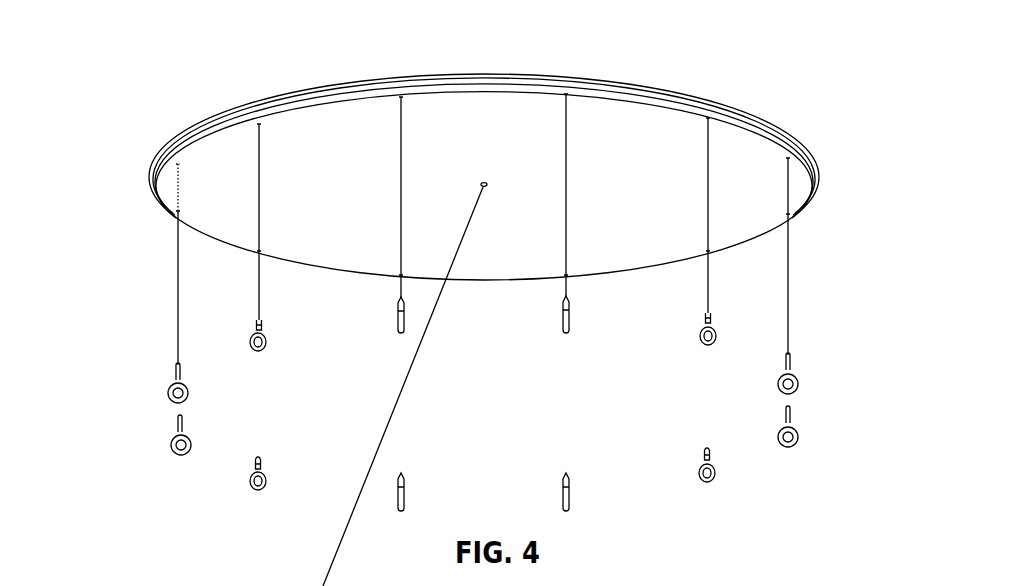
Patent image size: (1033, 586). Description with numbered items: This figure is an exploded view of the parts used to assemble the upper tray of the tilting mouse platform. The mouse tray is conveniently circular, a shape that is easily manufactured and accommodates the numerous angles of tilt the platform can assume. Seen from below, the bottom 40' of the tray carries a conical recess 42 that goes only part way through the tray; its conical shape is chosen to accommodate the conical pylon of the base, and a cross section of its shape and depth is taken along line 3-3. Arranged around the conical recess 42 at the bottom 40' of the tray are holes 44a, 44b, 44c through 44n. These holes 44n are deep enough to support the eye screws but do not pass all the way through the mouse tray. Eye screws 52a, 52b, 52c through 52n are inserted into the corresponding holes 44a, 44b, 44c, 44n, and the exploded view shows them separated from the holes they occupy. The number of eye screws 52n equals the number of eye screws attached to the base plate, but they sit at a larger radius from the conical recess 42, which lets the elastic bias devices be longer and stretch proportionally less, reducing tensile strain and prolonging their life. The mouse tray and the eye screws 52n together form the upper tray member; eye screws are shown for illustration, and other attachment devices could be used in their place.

The bottom of the tray 40' is at (484, 177).
The hole 44a is at (401, 97).
The hole 44b is at (259, 124).
The hole 44c is at (178, 164).
The holes 44n is at (178, 211).
The conical recess 42 is at (487, 185).
The line 3- 3 is at (524, 180).
The eye screw 52a is at (718, 338).
The eye screw 52b is at (800, 385).
The eye screw 52c is at (800, 437).
The eye screws 52n is at (718, 472).